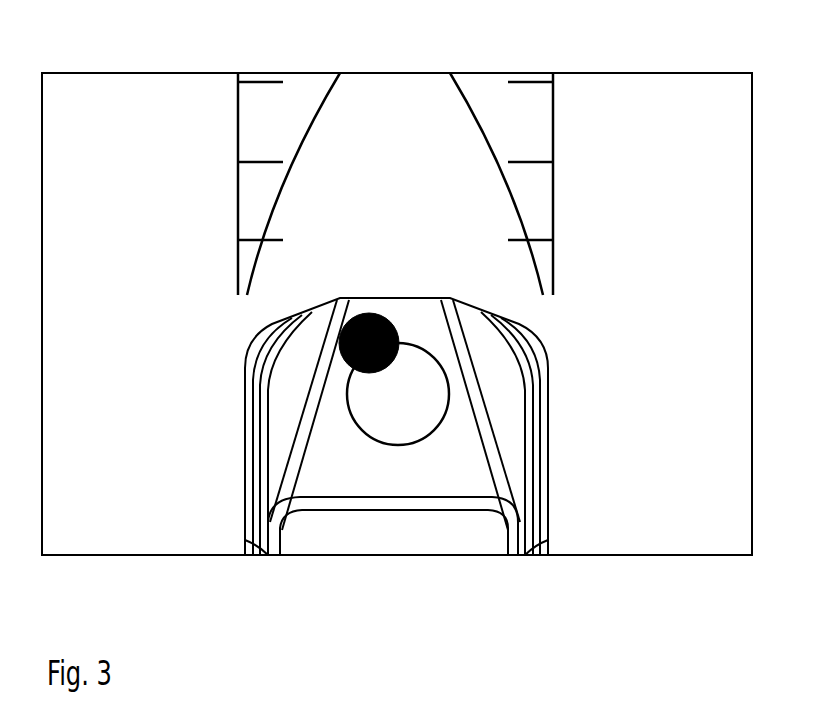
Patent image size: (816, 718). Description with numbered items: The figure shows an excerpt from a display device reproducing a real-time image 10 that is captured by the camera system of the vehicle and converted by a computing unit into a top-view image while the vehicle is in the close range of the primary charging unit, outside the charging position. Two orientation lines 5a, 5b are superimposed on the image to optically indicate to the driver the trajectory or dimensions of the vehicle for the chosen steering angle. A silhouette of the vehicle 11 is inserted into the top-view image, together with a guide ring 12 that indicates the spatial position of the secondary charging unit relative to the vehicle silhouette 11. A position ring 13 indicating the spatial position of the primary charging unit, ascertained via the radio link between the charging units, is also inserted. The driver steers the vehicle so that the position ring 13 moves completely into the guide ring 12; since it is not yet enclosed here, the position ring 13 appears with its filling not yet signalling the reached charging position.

The real-time image 10 is at (66, 72).
The orientation line 5a is at (238, 137).
The orientation line 5b is at (553, 137).
The silhouette of the vehicle 11 is at (253, 490).
The guide ring 12 is at (449, 394).
The position ring 13 is at (340, 343).